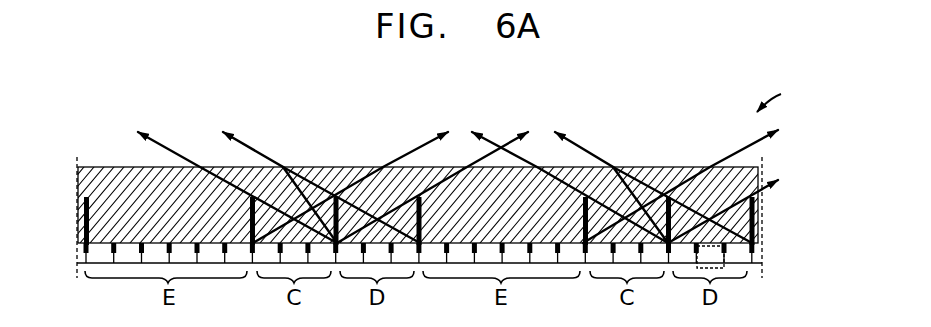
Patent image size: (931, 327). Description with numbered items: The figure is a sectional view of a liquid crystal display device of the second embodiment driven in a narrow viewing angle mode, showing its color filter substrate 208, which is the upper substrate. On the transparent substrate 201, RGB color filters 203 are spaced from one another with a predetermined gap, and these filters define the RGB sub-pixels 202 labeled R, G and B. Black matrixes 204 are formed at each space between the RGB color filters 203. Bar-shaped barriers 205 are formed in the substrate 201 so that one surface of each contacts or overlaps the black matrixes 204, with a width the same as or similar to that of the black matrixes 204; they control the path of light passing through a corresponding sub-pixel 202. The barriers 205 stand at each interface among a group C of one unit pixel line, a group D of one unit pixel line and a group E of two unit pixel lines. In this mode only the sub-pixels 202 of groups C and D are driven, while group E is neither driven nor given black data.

The substrate 201 is at (753, 176).
The RGB sub-pixels 202 is at (712, 244).
The RGB color filters 203 is at (760, 260).
The black matrixes 204 is at (760, 249).
The barriers 205 is at (756, 213).
The color filter substrate 208 is at (787, 92).